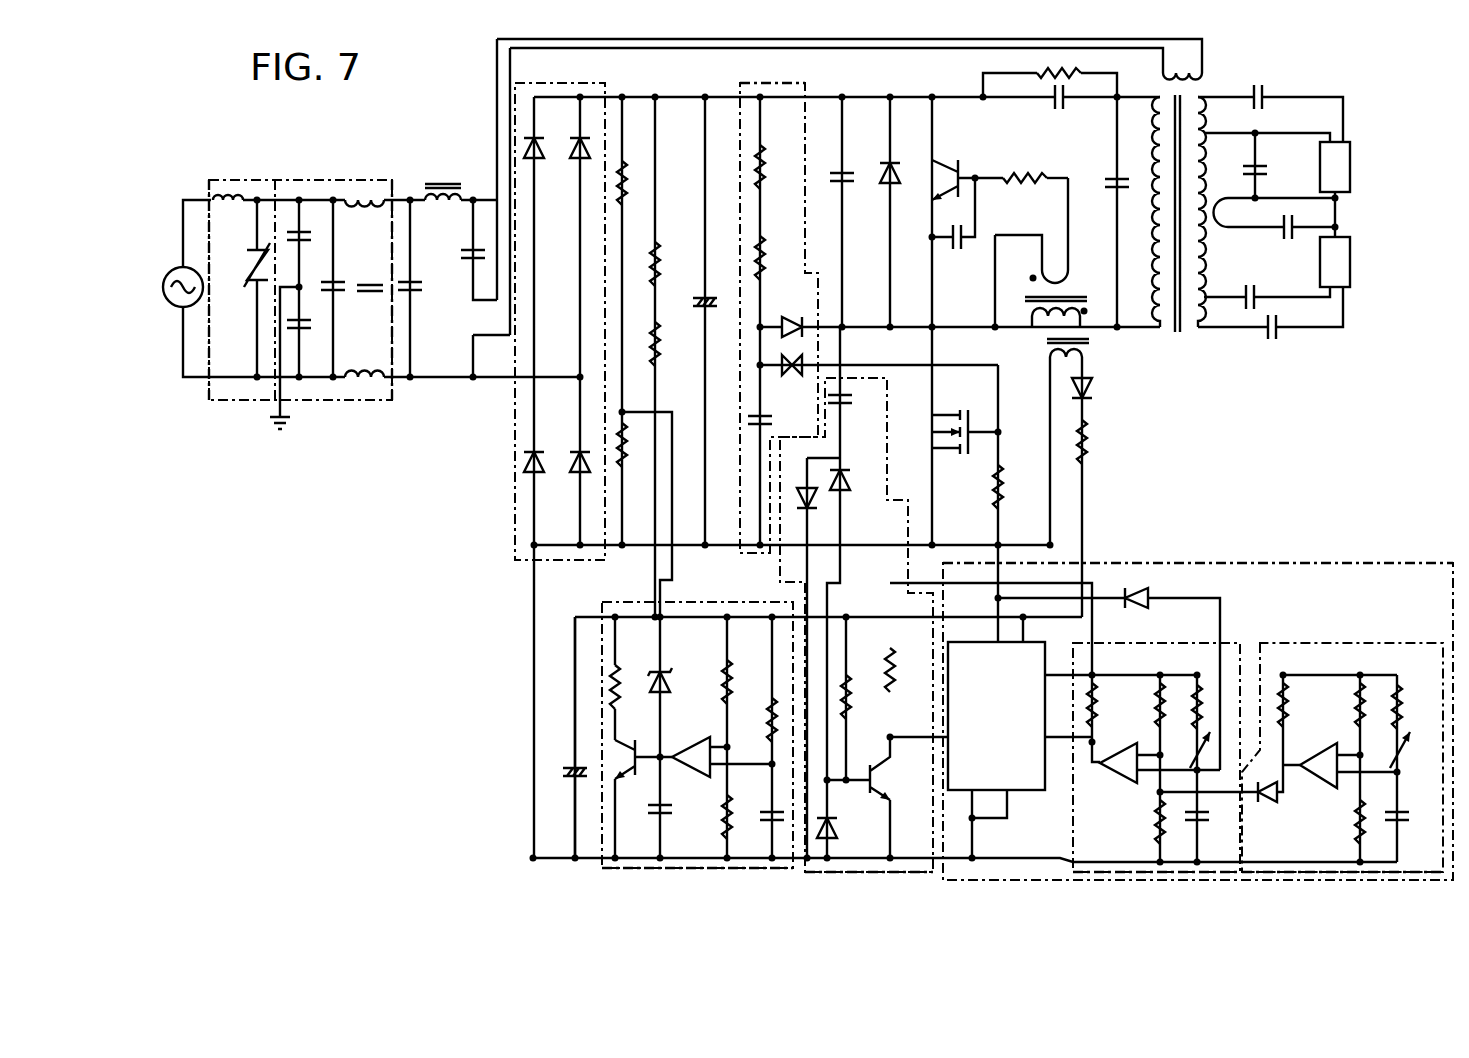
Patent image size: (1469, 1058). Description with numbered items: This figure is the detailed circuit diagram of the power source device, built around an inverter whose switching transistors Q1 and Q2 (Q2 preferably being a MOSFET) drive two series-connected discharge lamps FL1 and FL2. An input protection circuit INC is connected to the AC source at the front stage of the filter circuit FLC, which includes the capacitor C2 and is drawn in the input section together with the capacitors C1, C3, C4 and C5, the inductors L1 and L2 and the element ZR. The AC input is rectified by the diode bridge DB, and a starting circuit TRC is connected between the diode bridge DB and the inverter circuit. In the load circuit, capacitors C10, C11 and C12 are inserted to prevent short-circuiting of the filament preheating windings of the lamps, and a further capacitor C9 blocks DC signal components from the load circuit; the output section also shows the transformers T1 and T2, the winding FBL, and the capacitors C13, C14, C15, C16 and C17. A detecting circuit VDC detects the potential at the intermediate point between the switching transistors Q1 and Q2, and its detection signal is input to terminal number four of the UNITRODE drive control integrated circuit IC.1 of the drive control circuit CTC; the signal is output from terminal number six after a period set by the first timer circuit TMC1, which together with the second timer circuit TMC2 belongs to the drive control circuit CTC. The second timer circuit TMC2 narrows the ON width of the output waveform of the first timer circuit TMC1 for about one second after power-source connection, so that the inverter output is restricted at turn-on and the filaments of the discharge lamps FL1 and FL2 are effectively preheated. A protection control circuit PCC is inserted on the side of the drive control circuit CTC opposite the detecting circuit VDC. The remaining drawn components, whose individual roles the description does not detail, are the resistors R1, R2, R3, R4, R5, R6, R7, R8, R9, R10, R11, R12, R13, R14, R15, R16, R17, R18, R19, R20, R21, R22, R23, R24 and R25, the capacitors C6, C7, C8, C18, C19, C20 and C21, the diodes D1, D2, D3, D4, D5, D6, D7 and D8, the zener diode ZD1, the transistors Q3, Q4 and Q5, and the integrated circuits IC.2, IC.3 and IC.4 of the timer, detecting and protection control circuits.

The input protection circuit INC is at (229, 402).
The filter circuit FLC is at (372, 402).
The varistor ZR is at (248, 288).
The capacitor C1 is at (310, 243).
The capacitor C2 is at (310, 332).
The capacitor C3 is at (352, 288).
The capacitor C4 is at (428, 288).
The capacitor C5 is at (456, 254).
The capacitor C6 is at (715, 319).
The capacitor C7 is at (778, 425).
The capacitor C8 is at (853, 414).
The DC blocking capacitor C9 is at (854, 194).
The short-circuit preventing capacitor C10 is at (1069, 113).
The short-circuit preventing capacitor C11 is at (1105, 169).
The short-circuit preventing capacitor C12 is at (959, 231).
The capacitor C13 is at (1280, 342).
The capacitor C14 is at (1245, 285).
The capacitor C15 is at (1265, 234).
The capacitor C16 is at (1286, 93).
The capacitor C17 is at (1344, 507).
The capacitor C18 is at (1216, 832).
The capacitor C19 is at (783, 822).
The capacitor C20 is at (680, 825).
The variable capacitor C21 is at (562, 770).
The inductor L1 is at (364, 264).
The inductor L2 is at (443, 169).
The feedback coil FBL is at (1202, 73).
The diode bridge DB is at (513, 524).
The starting circuit TRC is at (772, 70).
The protection control circuit PCC is at (642, 868).
The detecting circuit VDC is at (913, 872).
The drive control circuit CTC is at (1217, 563).
The first timer circuit TMC1 is at (1098, 872).
The second timer circuit TMC2 is at (1302, 872).
The resistor R1 is at (638, 175).
The resistor R2 is at (636, 460).
The resistor R3 is at (674, 264).
The resistor R4 is at (674, 346).
The resistor R5 is at (1035, 166).
The resistor R6 is at (1104, 442).
The resistor R7 is at (1017, 487).
The variable resistor R8 is at (1414, 705).
The variable resistor wiper R9 is at (1413, 750).
The resistor R10 is at (1340, 705).
The resistor R11 is at (1341, 826).
The resistor R12 is at (1308, 712).
The variable resistor R13 is at (1204, 690).
The variable resistor wiper R14 is at (1230, 750).
The resistor R15 is at (1140, 703).
The resistor R16 is at (1116, 707).
The resistor R17 is at (1141, 826).
The resistor R18 is at (913, 659).
The resistor R19 is at (870, 711).
The resistor R20 is at (750, 659).
The resistor R21 is at (707, 692).
The resistor R22 is at (738, 815).
The resistor R23 is at (607, 690).
The resistor R24 is at (938, 120).
The resistor R25 is at (782, 247).
The diode D1 is at (906, 160).
The diode D2 is at (856, 468).
The diode D3 is at (815, 512).
The diode D4 is at (1271, 810).
The diode D5 is at (1103, 395).
The diode D6 is at (1157, 589).
The diode D7 is at (848, 829).
The diode D8 is at (798, 314).
The zener diode ZD1 is at (681, 665).
The switching transistor Q1 is at (967, 168).
The switching transistor Q2 is at (965, 448).
The transistor Q3 is at (643, 786).
The transistor Q4 is at (898, 797).
The diac Q5 is at (789, 382).
The drive control IC (IC/UC 3842) IC.1 is at (996, 716).
The operational amplifier IC.2 is at (1105, 778).
The operational amplifier IC.3 is at (1305, 778).
The operational amplifier IC.4 is at (722, 773).
The transformer T1 is at (1052, 316).
The transformer T2 is at (1179, 232).
The discharge lamp FL1 is at (1352, 180).
The discharge lamp FL2 is at (1352, 275).